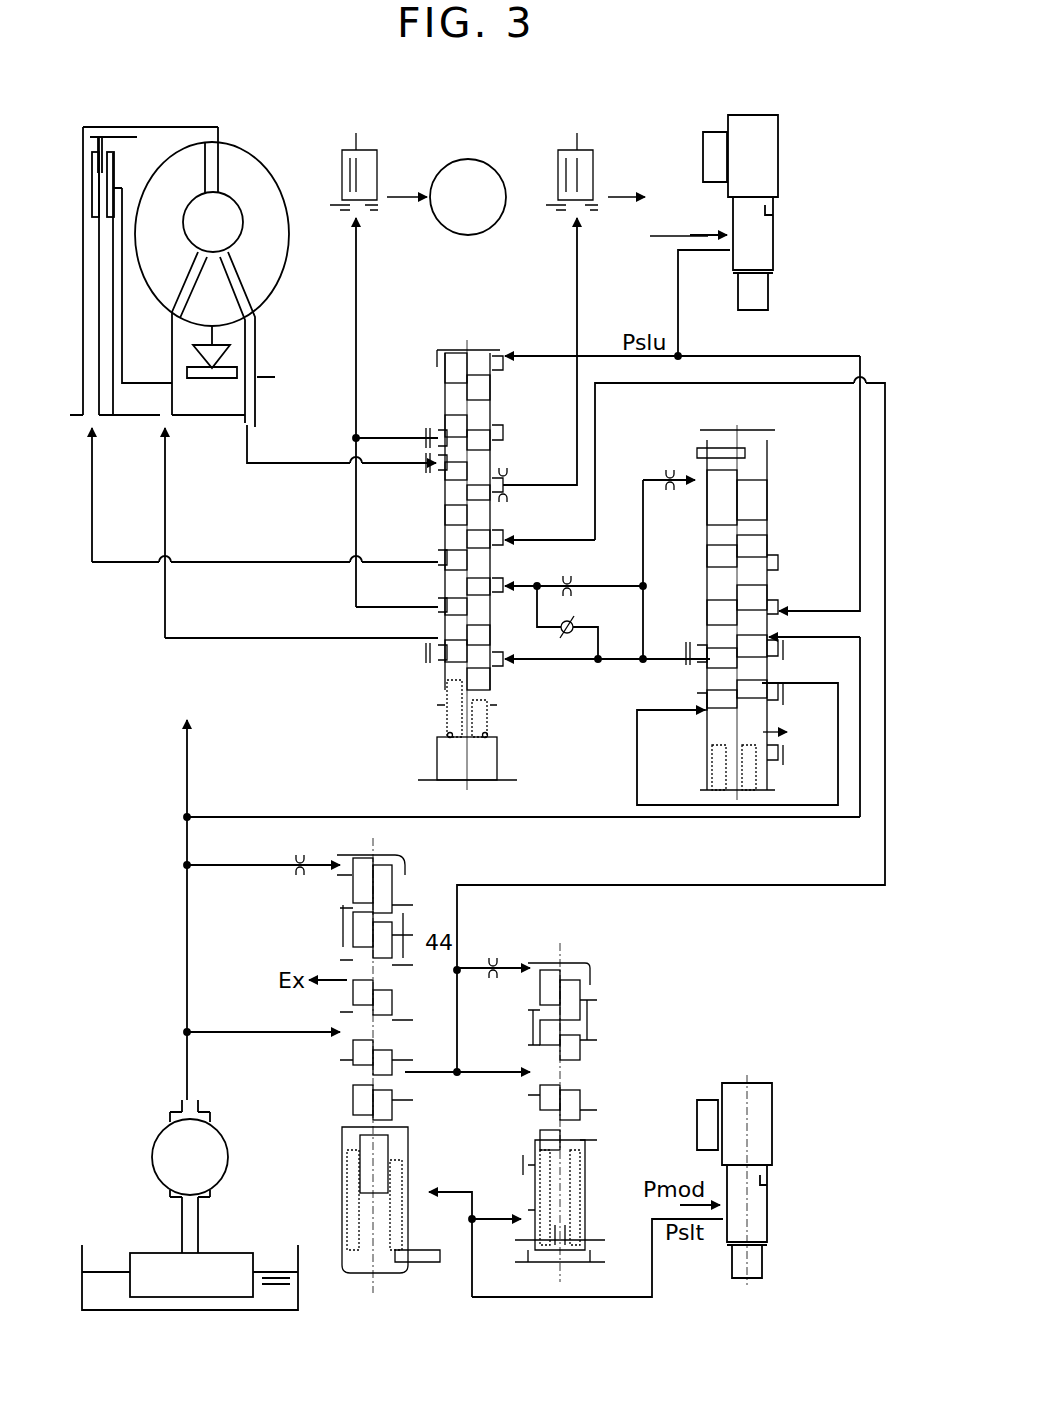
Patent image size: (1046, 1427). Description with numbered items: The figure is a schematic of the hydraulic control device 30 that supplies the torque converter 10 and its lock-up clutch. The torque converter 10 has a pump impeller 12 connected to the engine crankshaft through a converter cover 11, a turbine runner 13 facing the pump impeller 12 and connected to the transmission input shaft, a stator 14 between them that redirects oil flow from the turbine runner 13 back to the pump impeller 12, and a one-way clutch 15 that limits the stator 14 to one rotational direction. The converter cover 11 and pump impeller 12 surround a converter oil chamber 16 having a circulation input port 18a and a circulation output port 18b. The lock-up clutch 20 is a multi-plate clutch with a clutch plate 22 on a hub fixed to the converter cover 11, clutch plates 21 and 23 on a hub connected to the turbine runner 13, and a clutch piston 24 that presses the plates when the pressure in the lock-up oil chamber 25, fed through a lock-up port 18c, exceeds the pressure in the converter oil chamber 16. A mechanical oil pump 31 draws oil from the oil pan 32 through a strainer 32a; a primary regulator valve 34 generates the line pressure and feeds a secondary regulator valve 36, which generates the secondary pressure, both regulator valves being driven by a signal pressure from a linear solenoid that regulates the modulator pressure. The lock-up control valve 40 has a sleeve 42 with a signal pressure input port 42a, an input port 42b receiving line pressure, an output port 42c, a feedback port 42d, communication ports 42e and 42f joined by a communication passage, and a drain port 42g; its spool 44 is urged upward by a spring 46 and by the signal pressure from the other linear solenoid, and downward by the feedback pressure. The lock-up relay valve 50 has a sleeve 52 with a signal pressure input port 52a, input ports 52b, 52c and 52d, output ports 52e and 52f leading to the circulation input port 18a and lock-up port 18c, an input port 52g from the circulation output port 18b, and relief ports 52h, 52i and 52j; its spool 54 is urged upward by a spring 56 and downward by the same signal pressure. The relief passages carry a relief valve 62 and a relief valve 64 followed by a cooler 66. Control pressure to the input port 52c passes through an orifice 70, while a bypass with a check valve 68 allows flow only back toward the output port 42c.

The torque converter 10 is at (176, 355).
The converter cover 11 is at (204, 127).
The pump impeller 12 is at (255, 179).
The turbine runner 13 is at (175, 163).
The stator 14 is at (205, 264).
The one-way clutch 15 is at (240, 355).
The converter oil chamber 16 is at (140, 172).
The circulation input port 18a is at (78, 440).
The circulation output port 18b is at (255, 425).
The lock-up port 18c is at (156, 440).
The lock-up clutch 20 is at (80, 160).
The clutch plate 21 is at (96, 200).
The clutch plate 22 is at (100, 136).
The clutch plate 23 is at (90, 178).
The clutch piston 24 is at (112, 263).
The lock-up oil chamber 25 is at (140, 386).
The hydraulic control device 30 is at (804, 122).
The mechanical oil pump 31 is at (158, 1141).
The oil pan 32 is at (80, 1250).
The strainer 32a is at (142, 1252).
The primary regulator valve 34 is at (407, 892).
The secondary regulator valve 36 is at (597, 976).
The lock-up control valve 40 is at (751, 608).
The sleeve 42 is at (768, 482).
The signal pressure input port 42a is at (774, 615).
The input port 42b is at (766, 646).
The output port 42c is at (706, 654).
The feedback port 42d is at (695, 482).
The communication port 42e is at (766, 690).
The communication port 42f is at (710, 700).
The drain port 42g is at (763, 755).
The spool 44 is at (763, 568).
The spring 46 is at (714, 766).
The lock-up relay valve 50 is at (469, 550).
The sleeve 52 is at (500, 372).
The signal pressure input port 52a is at (498, 352).
The input port 52b is at (498, 666).
The input port 52c is at (500, 584).
The input port 52d is at (500, 546).
The output port 52e is at (436, 560).
The output port 52f is at (427, 654).
The input port 52g is at (430, 472).
The relief port 52h is at (500, 488).
The relief port 52i is at (428, 610).
The relief port 52j is at (428, 434).
The spool 54 is at (495, 428).
The spring 56 is at (442, 704).
The relief valve 62 is at (594, 158).
The relief valve 64 is at (382, 158).
The cooler 66 is at (466, 158).
The check valve 68 is at (569, 642).
The orifice 70 is at (570, 580).